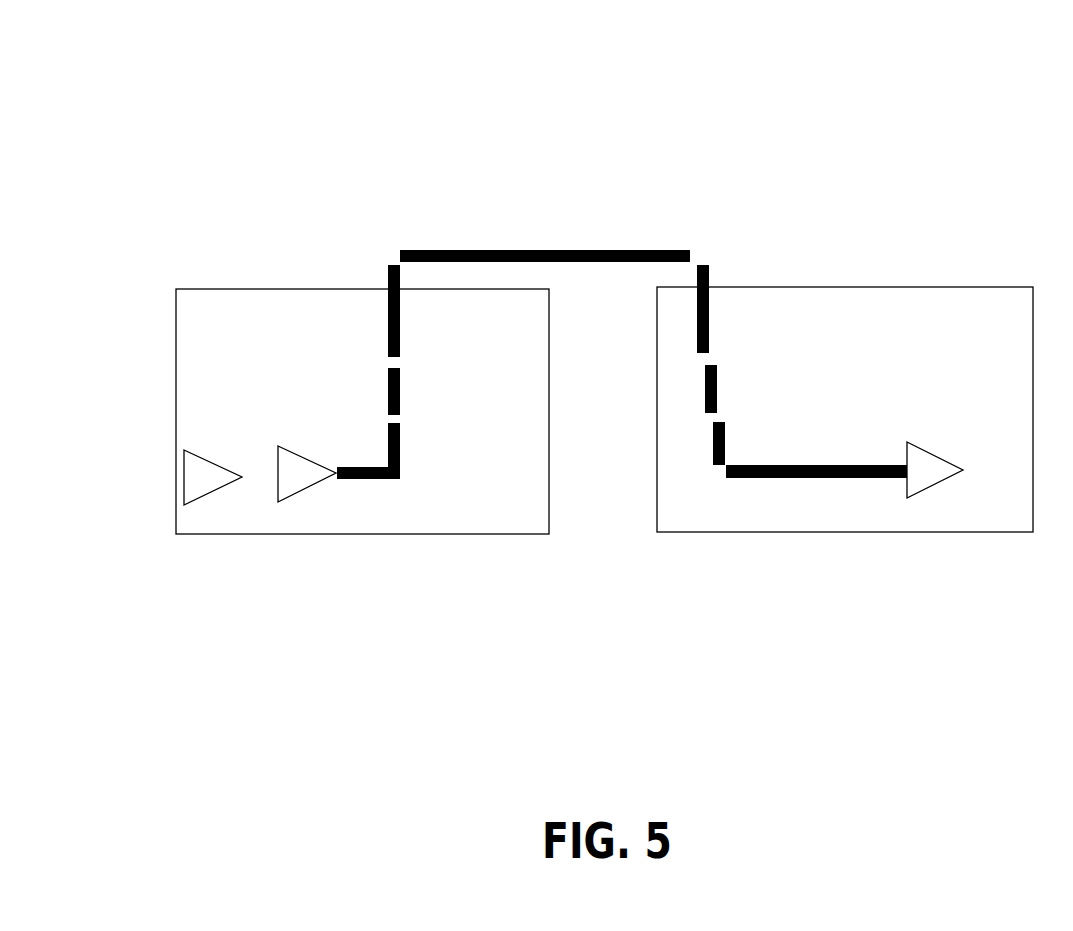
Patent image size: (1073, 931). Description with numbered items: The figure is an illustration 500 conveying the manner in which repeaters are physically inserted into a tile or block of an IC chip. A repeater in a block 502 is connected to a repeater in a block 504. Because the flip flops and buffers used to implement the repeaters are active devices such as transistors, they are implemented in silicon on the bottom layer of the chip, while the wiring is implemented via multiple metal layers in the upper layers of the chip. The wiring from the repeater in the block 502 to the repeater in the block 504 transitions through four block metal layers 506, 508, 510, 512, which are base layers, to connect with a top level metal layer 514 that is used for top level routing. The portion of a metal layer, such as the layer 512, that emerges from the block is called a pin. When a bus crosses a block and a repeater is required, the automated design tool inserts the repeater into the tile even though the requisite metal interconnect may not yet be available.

The illustration 500 is at (147, 119).
The block 502 is at (362, 411).
The block 504 is at (845, 398).
The block metal layer 506 is at (387, 495).
The block metal layer 508 is at (380, 440).
The block metal layer 510 is at (380, 393).
The block metal layer 512 is at (378, 307).
The top level metal layer 514 is at (637, 232).